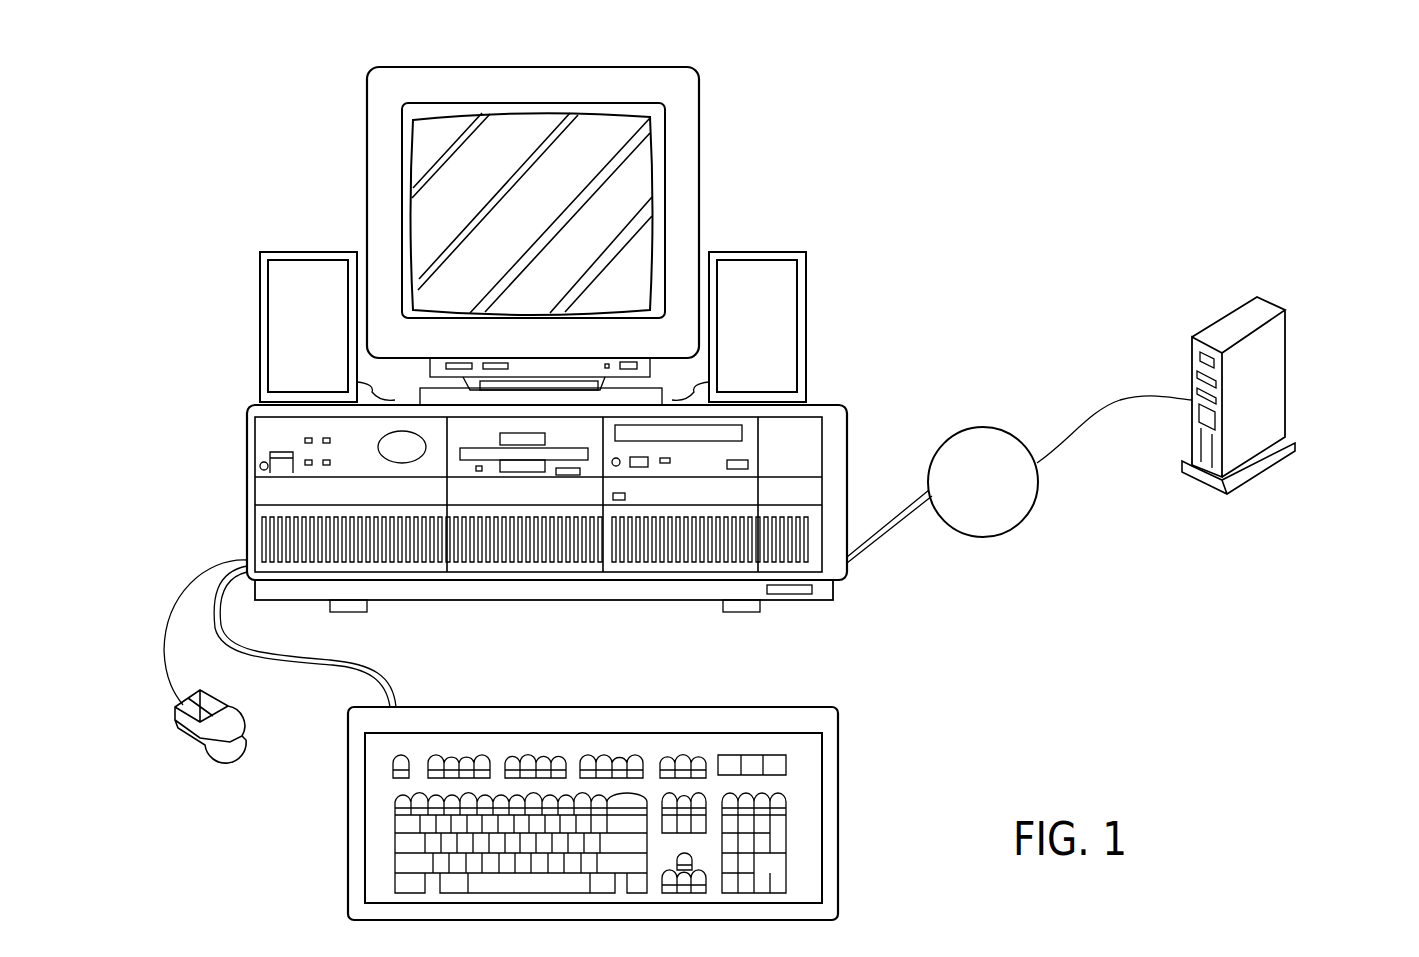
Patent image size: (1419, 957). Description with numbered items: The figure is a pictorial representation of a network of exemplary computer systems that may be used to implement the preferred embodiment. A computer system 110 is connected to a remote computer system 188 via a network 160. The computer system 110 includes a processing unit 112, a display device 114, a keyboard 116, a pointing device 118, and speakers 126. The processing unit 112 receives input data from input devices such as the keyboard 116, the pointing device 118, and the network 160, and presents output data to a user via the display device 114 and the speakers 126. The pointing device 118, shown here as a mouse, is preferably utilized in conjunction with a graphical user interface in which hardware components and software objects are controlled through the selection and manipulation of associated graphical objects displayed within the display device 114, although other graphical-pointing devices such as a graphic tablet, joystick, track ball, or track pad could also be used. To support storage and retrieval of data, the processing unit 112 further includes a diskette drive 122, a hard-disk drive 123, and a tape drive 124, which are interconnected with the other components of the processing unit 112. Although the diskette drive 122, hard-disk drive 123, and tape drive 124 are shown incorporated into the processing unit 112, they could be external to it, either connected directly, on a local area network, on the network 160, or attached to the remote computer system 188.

The computer system 110 is at (1000, 164).
The processing unit 112 is at (236, 453).
The display device 114 is at (722, 238).
The keyboard 116 is at (720, 692).
The pointing device 118 is at (193, 732).
The diskette drive 122 is at (531, 472).
The hard-disk drive 123 is at (675, 490).
The tape drive 124 is at (683, 432).
The speakers 126 is at (260, 320).
The network 160 is at (987, 412).
The remote computer system 188 is at (1285, 403).